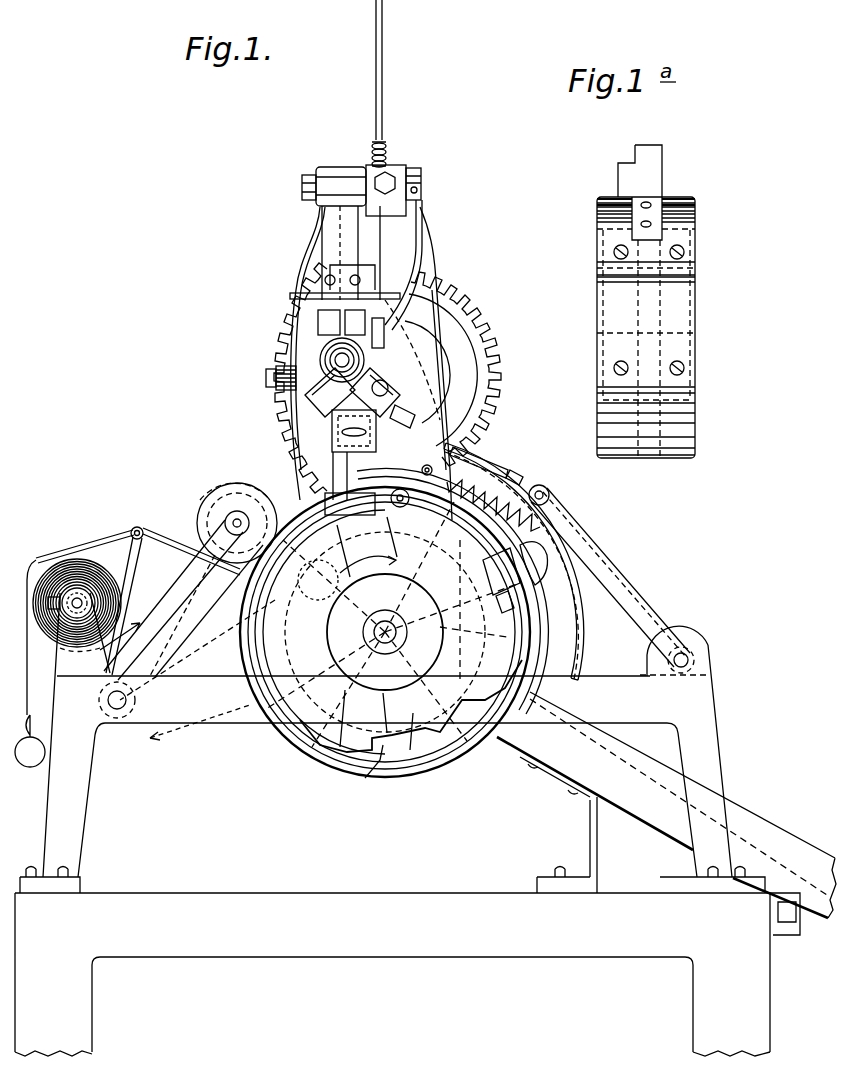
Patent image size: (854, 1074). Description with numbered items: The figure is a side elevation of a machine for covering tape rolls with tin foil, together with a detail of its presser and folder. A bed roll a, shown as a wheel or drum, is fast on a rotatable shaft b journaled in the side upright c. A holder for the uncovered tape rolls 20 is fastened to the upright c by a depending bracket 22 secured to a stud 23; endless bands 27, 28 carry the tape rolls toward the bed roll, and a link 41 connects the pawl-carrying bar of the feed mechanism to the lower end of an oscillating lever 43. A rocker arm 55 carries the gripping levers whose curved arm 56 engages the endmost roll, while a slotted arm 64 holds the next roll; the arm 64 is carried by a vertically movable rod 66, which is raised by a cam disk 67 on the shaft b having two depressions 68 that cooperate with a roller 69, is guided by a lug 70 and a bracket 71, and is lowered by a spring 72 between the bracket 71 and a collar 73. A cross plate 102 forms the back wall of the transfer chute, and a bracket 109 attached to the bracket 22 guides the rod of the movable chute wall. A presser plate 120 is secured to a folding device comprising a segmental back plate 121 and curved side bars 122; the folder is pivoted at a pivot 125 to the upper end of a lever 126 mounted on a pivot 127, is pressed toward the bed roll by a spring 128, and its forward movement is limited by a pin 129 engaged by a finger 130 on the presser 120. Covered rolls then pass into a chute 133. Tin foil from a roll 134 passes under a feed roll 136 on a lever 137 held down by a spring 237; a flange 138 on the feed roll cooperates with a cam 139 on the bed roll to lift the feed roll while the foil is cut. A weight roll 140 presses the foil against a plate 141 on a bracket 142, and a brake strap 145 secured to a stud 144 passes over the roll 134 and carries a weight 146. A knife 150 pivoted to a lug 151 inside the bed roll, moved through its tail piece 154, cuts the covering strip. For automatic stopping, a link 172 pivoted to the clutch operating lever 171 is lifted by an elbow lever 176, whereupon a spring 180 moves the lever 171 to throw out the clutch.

In FIG. 1, the operating lever 171 is at (383, 93).
In FIG. 1, the spring 180 is at (387, 150).
In FIG. 1, the link 172 is at (413, 172).
In FIG. 1, the elbow lever 176 is at (422, 214).
In FIG. 1, the rocker arm 55 is at (330, 240).
In FIG. 1, the lever 43 is at (300, 265).
In FIG. 1, the vertically movable rod 66 is at (340, 290).
In FIG. 1, the side upright c is at (432, 273).
In FIG. 1, the spring 72 is at (380, 312).
In FIG. 1, the bracket 71 is at (335, 297).
In FIG. 1, the slotted arm 64 is at (318, 322).
In FIG. 1, the arm 56 is at (330, 352).
In FIG. 1, the tape rolls 20 is at (322, 368).
In FIG. 1, the link 41 is at (270, 378).
In FIG. 1, the collar 73 is at (386, 332).
In FIG. 1, the endless band 27 is at (305, 396).
In FIG. 1, the endless band 28 is at (396, 381).
In FIG. 1, the bracket 109 is at (333, 426).
In FIG. 1, the cross plate 102 is at (332, 440).
In FIG. 1, the depending bracket 22 is at (335, 466).
In FIG. 1, the presser plate 120 is at (483, 456).
In FIG. 1A, the presser plate 120 is at (662, 148).
In FIG. 1, the pin 129 is at (433, 463).
In FIG. 1, the spring 128 is at (512, 478).
In FIG. 1, the pivot 125 is at (549, 495).
In FIG. 1, the flange 138 is at (215, 492).
In FIG. 1, the feed roll 136 is at (252, 500).
In FIG. 1, the stud 144 is at (134, 528).
In FIG. 1, the weight roll 140 is at (190, 545).
In FIG. 1, the brake strap 145 is at (76, 556).
In FIG. 1, the roll of tin foil 134 is at (104, 588).
In FIG. 1, the lever 137 is at (186, 588).
In FIG. 1, the stud 23 is at (352, 514).
In FIG. 1, the roller 69 is at (396, 506).
In FIG. 1, the spring 237 is at (318, 560).
In FIG. 1, the depressions 68 is at (384, 728).
In FIG. 1, the lug 70 is at (370, 557).
In FIG. 1, the lever 126 is at (612, 575).
In FIG. 1, the plate 141 is at (240, 596).
In FIG. 1, the bracket 142 is at (215, 616).
In FIG. 1, the cam 139 is at (302, 607).
In FIG. 1, the lug 151 is at (490, 572).
In FIG. 1, the knife 150 is at (492, 598).
In FIG. 1, the tail piece 154 is at (500, 625).
In FIG. 1, the curved side bars 122 is at (574, 620).
In FIG. 1, the segmental back plate 121 is at (578, 645).
In FIG. 1A, the segmental back plate 121 is at (695, 333).
In FIG. 1, the pivot 127 is at (690, 657).
In FIG. 1, the rotatable shaft b is at (385, 632).
In FIG. 1, the bed roll a is at (370, 777).
In FIG. 1, the cam disk 67 is at (333, 755).
In FIG. 1, the weight 146 is at (30, 767).
In FIG. 1, the chute 133 is at (772, 830).
In FIG. 1A, the finger 130 is at (618, 165).